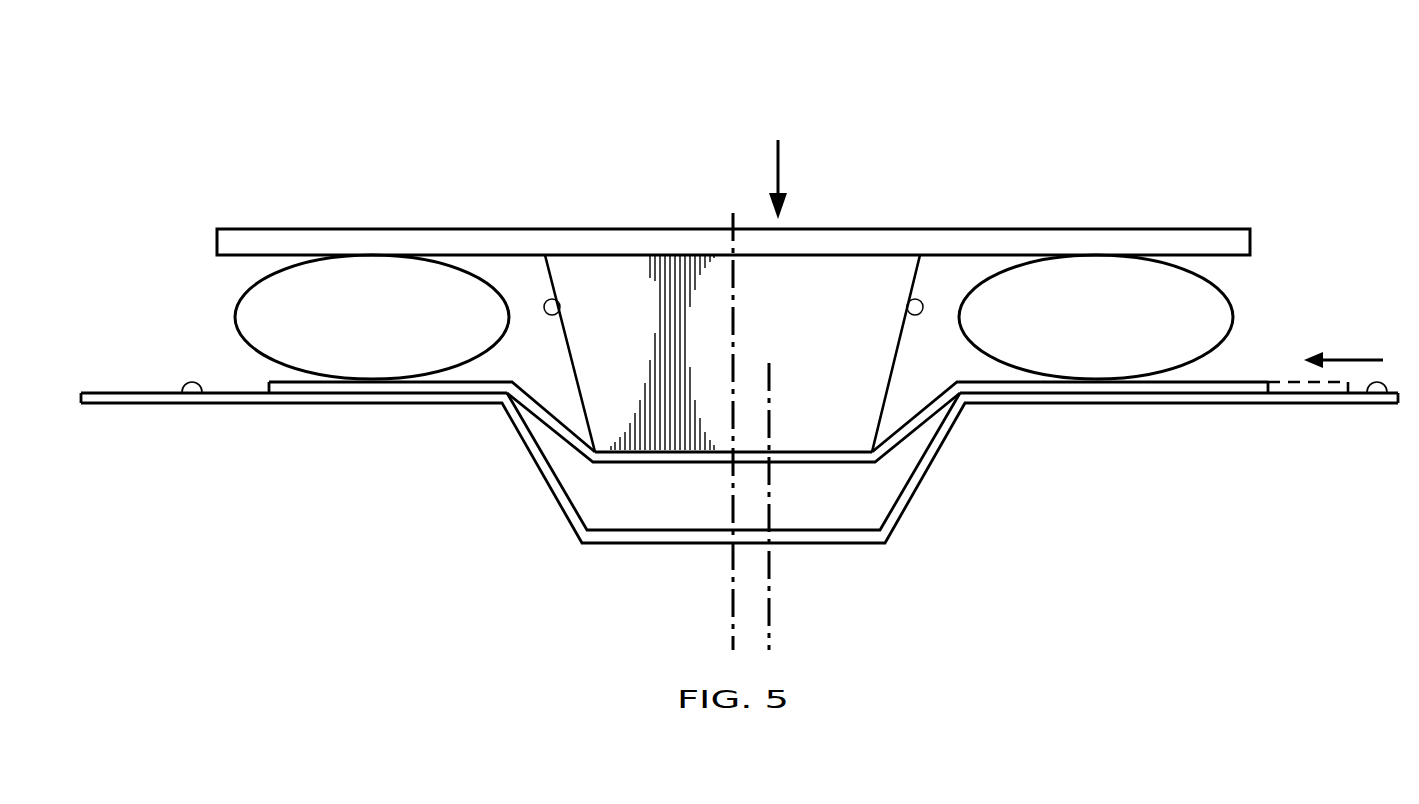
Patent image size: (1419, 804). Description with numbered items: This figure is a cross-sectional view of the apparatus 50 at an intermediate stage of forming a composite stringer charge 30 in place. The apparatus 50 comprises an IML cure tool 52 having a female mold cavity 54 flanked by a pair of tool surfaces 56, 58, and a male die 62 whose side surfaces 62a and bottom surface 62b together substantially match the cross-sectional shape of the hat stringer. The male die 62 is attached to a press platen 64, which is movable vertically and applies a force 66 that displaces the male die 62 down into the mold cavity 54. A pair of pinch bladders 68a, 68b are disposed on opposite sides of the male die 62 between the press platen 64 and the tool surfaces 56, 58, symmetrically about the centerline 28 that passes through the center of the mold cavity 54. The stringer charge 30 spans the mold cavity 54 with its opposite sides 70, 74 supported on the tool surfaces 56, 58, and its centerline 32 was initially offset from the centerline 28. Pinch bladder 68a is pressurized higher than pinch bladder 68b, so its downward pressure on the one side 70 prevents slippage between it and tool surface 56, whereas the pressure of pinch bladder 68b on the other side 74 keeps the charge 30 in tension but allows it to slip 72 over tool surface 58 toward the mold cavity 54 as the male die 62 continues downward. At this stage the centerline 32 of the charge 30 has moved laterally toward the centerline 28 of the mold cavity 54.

The apparatus 50 is at (508, 68).
The press platen 64 is at (468, 228).
The force 66 is at (781, 168).
The pinch bladder 68a is at (235, 317).
The pinch bladder 68b is at (1221, 282).
The male die 62 is at (750, 385).
The side surfaces 62a is at (560, 307).
The bottom surface 62b is at (812, 455).
The side of the charge 70 is at (807, 389).
The other side of the charge 74 is at (1244, 380).
The IML cure tool 52 is at (739, 438).
The stringer charge 30 is at (567, 445).
The mold cavity 54 is at (594, 499).
The tool surface 56 is at (191, 404).
The tool surface 58 is at (1383, 404).
The centerline 28 is at (731, 578).
The centerline of the charge 32 is at (771, 604).
The slip 72 is at (1361, 356).